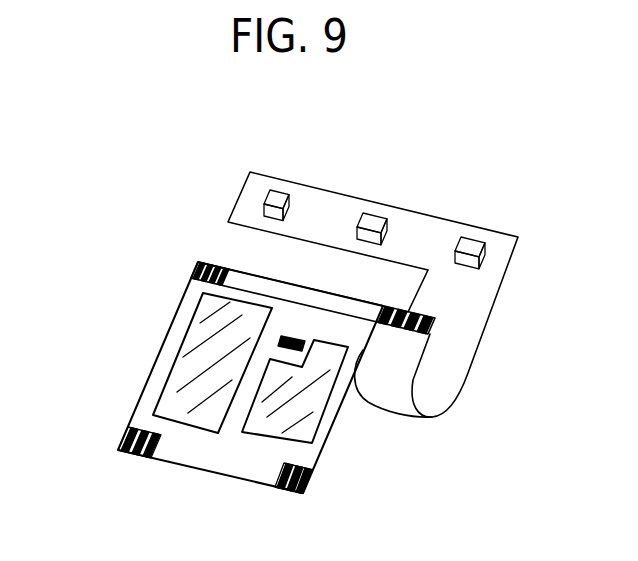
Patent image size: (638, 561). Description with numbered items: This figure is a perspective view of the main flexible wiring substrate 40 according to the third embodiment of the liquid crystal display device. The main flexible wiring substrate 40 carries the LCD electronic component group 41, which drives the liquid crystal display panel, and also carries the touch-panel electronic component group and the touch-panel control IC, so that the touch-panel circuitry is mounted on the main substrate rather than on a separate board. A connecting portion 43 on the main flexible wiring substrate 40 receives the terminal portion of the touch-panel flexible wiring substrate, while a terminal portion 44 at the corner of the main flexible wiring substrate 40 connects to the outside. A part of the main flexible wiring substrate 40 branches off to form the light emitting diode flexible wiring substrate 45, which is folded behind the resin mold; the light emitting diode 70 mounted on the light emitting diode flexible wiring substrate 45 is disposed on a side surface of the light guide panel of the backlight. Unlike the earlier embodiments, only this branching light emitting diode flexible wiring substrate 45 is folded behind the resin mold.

The main flexible wiring substrate 40 is at (160, 352).
The LCD electronic component group 41 is at (197, 307).
The connecting portion 43 is at (284, 337).
The terminal portion 44 is at (128, 432).
The light emitting diode flexible wiring substrate 45 is at (473, 358).
The light emitting diode 70 is at (473, 247).